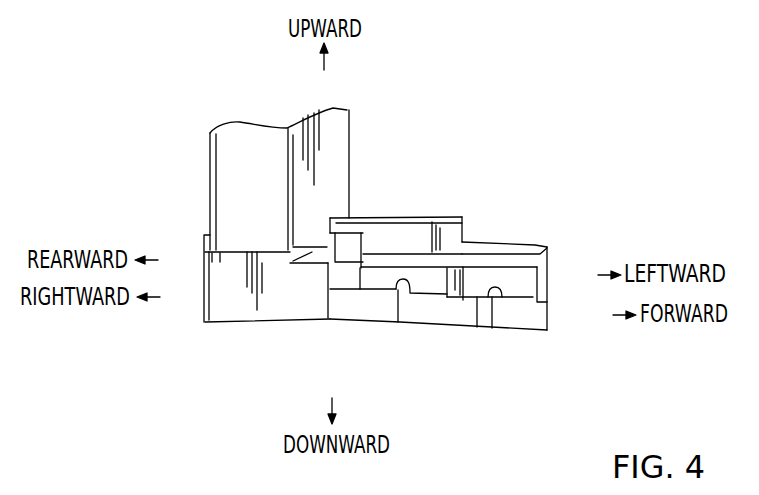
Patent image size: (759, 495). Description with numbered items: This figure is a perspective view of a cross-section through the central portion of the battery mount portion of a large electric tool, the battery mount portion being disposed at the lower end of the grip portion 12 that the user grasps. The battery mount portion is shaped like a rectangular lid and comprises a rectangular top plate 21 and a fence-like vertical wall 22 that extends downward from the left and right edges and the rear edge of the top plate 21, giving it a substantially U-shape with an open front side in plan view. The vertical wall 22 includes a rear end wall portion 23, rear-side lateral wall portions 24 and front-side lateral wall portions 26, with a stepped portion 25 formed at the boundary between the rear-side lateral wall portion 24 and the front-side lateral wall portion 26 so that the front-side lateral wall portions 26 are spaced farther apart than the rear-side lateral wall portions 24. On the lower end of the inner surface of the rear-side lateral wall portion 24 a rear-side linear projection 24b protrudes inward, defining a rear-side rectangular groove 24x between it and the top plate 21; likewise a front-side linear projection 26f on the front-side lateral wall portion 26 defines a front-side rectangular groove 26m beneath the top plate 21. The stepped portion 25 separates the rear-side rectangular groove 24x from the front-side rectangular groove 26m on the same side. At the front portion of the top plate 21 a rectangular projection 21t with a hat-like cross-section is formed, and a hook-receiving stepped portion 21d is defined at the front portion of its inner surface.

The grip portion 12 is at (323, 160).
The top plate 21 is at (483, 245).
The rectangular projection 21t is at (411, 235).
The hook-receiving stepped portion 21d is at (353, 255).
The vertical wall 22 is at (204, 299).
The rear end wall portion 23 is at (237, 290).
The rear-side lateral wall portion 24 is at (423, 330).
The rear-side linear projection 24b is at (353, 305).
The rear-side rectangular groove 24x is at (398, 328).
The stepped portion 25 is at (464, 325).
The front-side lateral wall portion 26 is at (551, 288).
The front-side rectangular groove 26m is at (489, 325).
The front-side linear projection 26f is at (513, 320).